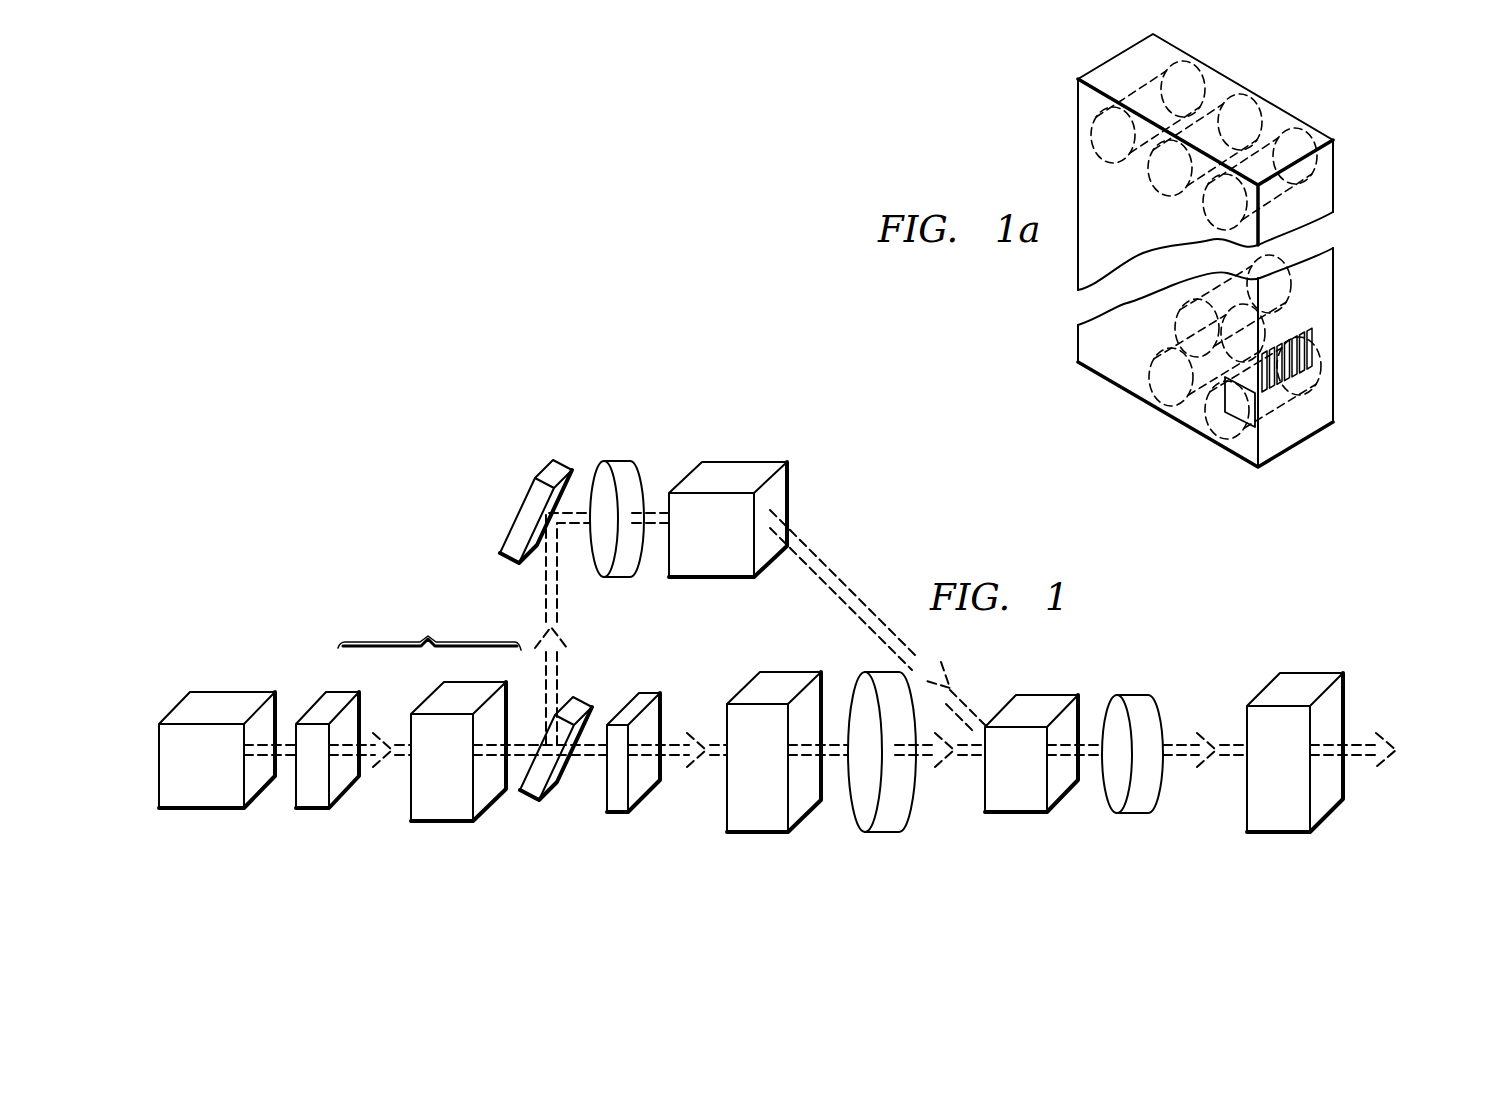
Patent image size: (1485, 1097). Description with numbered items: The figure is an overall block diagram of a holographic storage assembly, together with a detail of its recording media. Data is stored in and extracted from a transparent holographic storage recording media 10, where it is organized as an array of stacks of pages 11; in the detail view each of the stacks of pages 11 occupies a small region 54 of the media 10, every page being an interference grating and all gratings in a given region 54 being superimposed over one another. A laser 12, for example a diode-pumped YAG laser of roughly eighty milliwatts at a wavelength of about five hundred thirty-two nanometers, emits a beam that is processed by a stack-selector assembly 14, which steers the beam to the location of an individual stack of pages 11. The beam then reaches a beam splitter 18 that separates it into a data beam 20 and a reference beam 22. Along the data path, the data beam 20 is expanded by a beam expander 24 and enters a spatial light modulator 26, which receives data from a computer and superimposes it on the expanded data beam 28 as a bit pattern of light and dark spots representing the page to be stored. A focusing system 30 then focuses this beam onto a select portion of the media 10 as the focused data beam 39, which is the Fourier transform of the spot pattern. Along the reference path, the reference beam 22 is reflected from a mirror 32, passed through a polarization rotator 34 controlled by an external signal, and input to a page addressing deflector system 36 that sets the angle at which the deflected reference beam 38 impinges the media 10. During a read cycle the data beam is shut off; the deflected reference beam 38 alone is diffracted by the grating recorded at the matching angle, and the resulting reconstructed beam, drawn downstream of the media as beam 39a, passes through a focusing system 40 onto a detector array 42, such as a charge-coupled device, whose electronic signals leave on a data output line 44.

In FIG. 1, the holographic storage recording media 10 is at (1044, 702).
In FIG. 1A, the holographic storage recording media 10 is at (1272, 456).
In FIG. 1A, the stacks of pages 11 is at (1302, 388).
In FIG. 1, the laser 12 is at (223, 696).
In FIG. 1, the stack-selector assembly 14 is at (429, 714).
In FIG. 1, the beam splitter 18 is at (533, 792).
In FIG. 1, the data beam 20 is at (534, 745).
In FIG. 1, the reference beam 22 is at (560, 655).
In FIG. 1, the beam expander 24 is at (615, 806).
In FIG. 1, the spatial light modulator 26 is at (752, 820).
In FIG. 1, the expanded data beam 28 is at (677, 760).
In FIG. 1, the focusing system 30 is at (902, 807).
In FIG. 1, the mirror 32 is at (504, 553).
In FIG. 1, the polarization rotator 34 is at (620, 460).
In FIG. 1, the page addressing deflector system 36 is at (697, 568).
In FIG. 1, the deflected reference beam 38 is at (850, 586).
In FIG. 1, the focused data beam 39 is at (958, 764).
In FIG. 1, the readout beam 39a is at (1197, 744).
In FIG. 1, the focusing system 40 is at (1148, 793).
In FIG. 1, the detector array 42 is at (1309, 682).
In FIG. 1, the data output line 44 is at (1353, 748).
In FIG. 1A, the region 54 is at (1210, 420).